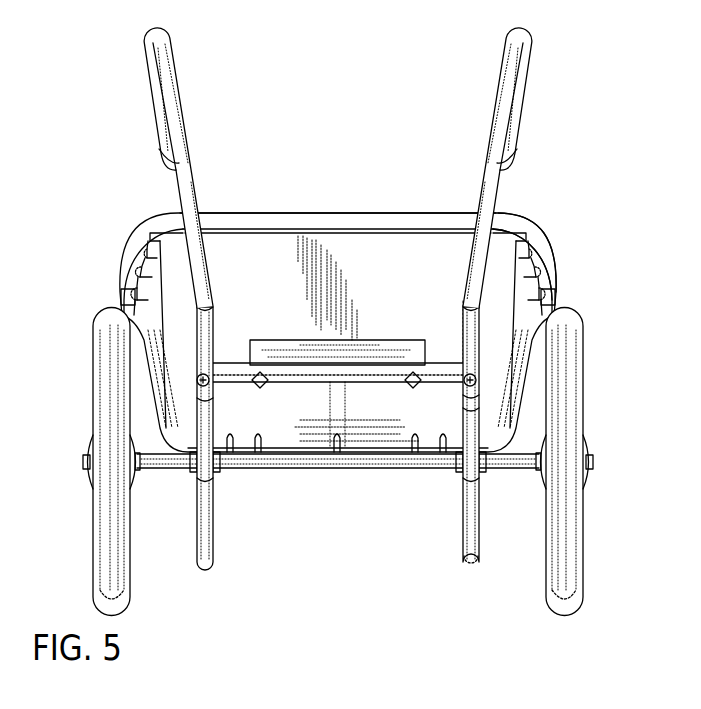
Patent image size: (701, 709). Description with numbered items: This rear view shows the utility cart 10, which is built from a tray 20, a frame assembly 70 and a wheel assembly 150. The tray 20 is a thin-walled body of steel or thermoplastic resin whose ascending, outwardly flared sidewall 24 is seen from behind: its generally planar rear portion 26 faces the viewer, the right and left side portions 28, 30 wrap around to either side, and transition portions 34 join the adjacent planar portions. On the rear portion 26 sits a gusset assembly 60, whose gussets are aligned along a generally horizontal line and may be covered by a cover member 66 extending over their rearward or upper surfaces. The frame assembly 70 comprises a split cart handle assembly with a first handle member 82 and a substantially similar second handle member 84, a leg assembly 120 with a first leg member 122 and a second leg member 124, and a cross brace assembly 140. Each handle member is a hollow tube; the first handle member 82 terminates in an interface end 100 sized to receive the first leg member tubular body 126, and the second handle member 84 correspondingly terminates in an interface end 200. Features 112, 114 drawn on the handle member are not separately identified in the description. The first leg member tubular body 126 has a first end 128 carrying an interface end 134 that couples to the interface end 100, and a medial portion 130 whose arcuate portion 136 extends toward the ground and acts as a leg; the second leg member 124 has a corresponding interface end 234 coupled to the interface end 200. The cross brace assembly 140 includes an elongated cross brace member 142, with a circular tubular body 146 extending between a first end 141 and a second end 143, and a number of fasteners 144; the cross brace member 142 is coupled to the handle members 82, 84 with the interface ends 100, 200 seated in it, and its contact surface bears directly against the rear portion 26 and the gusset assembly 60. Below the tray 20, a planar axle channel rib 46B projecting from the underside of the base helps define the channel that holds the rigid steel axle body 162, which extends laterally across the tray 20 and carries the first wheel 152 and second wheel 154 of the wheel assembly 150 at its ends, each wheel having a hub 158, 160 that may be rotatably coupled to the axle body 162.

The utility cart 10 is at (115, 105).
The tray 20 is at (370, 255).
The tray sidewall 24 is at (508, 263).
The rear portion 26 is at (300, 255).
The right side portion 28 is at (518, 293).
The left side portion 30 is at (142, 275).
The transition portions 34 is at (222, 248).
The axle channel rib 46B is at (281, 385).
The gusset assembly 60 is at (388, 347).
The cover member 66 is at (340, 343).
The frame assembly 70 is at (542, 63).
The first handle member 82 is at (494, 190).
The second handle member 84 is at (183, 194).
The first handle member interface end 100 is at (473, 341).
The right handle upper portion 112 is at (496, 97).
The right hand grip 114 is at (517, 147).
The leg assembly 120 is at (479, 523).
The first leg member 122 is at (463, 547).
The second leg member 124 is at (213, 533).
The first leg member tubular body 126 is at (479, 538).
The first leg member tubular body first end 128 is at (482, 406).
The first leg member tubular body medial portion 130 is at (463, 527).
The first leg member tubular body interface end 134 is at (478, 394).
The arcuate portion 136 is at (464, 562).
The cross brace assembly 140 is at (346, 376).
The cross brace member first end 141 is at (458, 363).
The cross brace member 142 is at (308, 449).
The cross brace member second end 143 is at (216, 363).
The fasteners 144 is at (198, 380).
The cross brace member tubular body 146 is at (310, 370).
The wheel assembly 150 is at (87, 514).
The first wheel 152 is at (582, 386).
The second wheel 154 is at (93, 350).
The first wheel hub 158 is at (587, 478).
The second wheel hub 160 is at (84, 440).
The axle body 162 is at (378, 465).
The second handle member interface end 200 is at (200, 328).
The second leg member tubular body interface end 234 is at (195, 401).